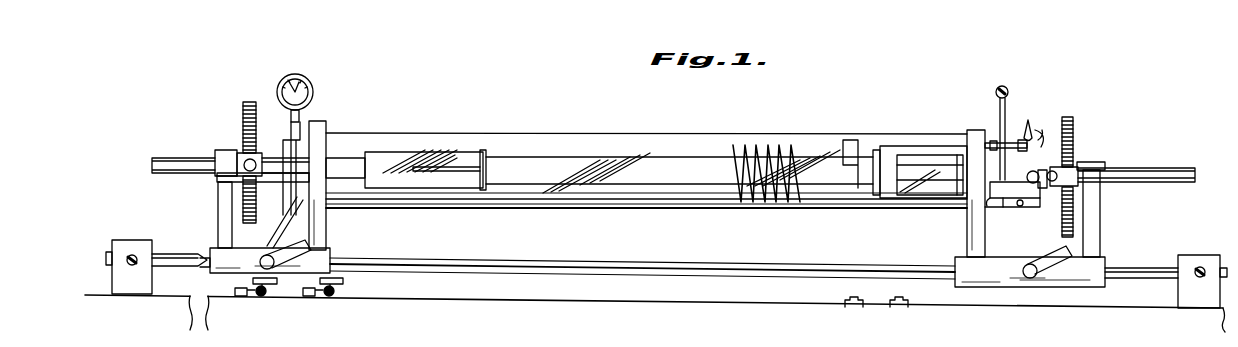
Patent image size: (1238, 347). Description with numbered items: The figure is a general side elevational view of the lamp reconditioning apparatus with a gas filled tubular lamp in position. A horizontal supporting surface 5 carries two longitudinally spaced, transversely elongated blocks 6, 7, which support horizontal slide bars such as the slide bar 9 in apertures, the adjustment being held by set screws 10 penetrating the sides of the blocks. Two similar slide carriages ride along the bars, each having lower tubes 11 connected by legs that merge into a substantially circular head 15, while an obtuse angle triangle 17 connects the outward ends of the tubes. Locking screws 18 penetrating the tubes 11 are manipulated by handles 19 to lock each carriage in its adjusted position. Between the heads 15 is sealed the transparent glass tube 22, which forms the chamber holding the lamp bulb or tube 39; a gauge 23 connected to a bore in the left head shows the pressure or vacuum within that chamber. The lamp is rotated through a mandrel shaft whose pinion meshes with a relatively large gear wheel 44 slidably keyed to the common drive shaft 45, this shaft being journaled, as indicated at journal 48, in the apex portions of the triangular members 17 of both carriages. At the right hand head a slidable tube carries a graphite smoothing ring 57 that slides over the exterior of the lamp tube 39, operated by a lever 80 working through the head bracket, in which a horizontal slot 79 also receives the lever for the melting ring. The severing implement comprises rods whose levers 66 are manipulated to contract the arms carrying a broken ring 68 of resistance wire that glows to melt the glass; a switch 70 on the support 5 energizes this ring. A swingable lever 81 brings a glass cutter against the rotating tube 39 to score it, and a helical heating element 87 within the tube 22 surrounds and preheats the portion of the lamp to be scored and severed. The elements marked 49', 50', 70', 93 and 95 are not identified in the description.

The horizontal supporting surface 5 is at (565, 304).
The block 6 is at (126, 239).
The block 7 is at (1188, 255).
The slide bar 9 is at (1130, 267).
The set screw 10 is at (1195, 280).
The lower tube 11 is at (227, 267).
The circular head 15 is at (316, 121).
The obtuse angle triangle 17 is at (211, 222).
The locking screw 18 is at (1032, 285).
The handle 19 is at (312, 243).
The transparent glass tube 22 is at (662, 131).
The gauge 23 is at (318, 84).
The lamp bulb or tube 39 is at (680, 156).
The gear wheel 44 is at (252, 102).
The common drive shaft 45 is at (170, 158).
The journal 48 is at (218, 150).
The bar 49' is at (201, 186).
The clamp 50' is at (261, 149).
The graphite smoothing ring 57 is at (882, 146).
The lever 66 is at (1028, 122).
The broken ring 68 is at (845, 142).
The switch 70 is at (836, 293).
The foot 70' is at (888, 292).
The horizontal slot 79 is at (997, 207).
The lever 80 is at (1010, 180).
The swingable lever 81 is at (1007, 89).
The helical heating element 87 is at (782, 145).
The shaft 93 is at (345, 158).
The cylinder 95 is at (417, 150).